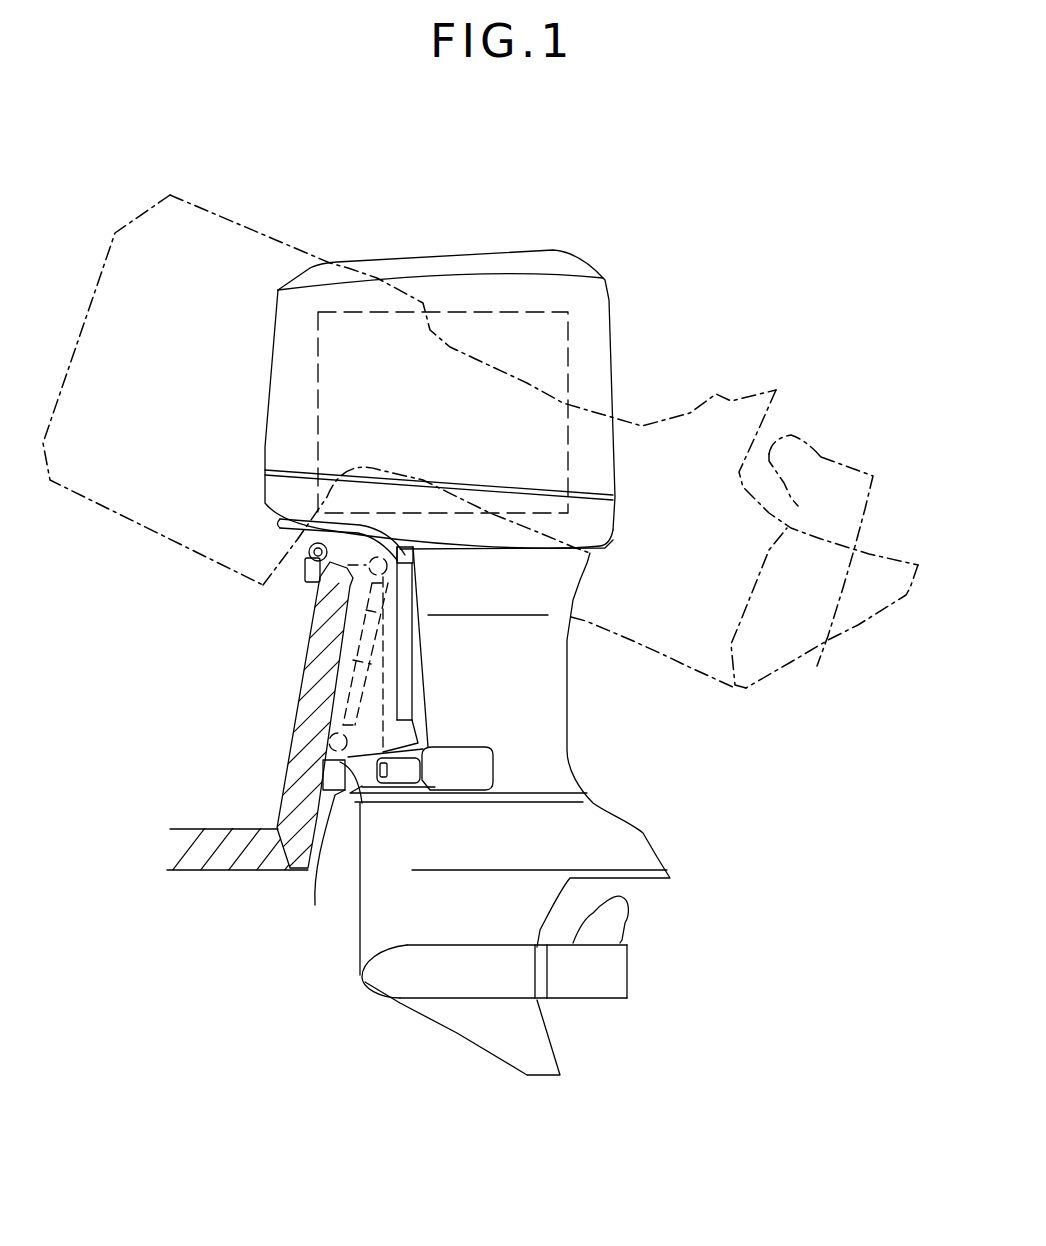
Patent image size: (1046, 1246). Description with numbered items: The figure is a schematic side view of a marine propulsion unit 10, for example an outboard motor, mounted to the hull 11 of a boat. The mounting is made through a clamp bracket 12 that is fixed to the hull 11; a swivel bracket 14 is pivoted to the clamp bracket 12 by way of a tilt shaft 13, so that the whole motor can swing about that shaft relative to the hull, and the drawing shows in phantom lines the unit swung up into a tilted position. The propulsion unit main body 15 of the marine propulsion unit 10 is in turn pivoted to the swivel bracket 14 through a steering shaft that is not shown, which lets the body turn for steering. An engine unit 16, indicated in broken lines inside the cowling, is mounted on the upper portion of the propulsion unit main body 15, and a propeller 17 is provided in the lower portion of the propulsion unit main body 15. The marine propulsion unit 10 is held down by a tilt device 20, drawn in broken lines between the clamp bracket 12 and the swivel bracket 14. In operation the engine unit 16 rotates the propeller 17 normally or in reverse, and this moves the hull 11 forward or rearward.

The marine propulsion unit 10 is at (645, 331).
The hull 11 is at (198, 829).
The clamp bracket 12 is at (317, 858).
The tilt shaft 13 is at (308, 552).
The swivel bracket 14 is at (320, 653).
The propulsion unit main body 15 is at (567, 675).
The engine unit 16 is at (568, 370).
The propeller 17 is at (622, 917).
The tilt device 20 is at (345, 708).